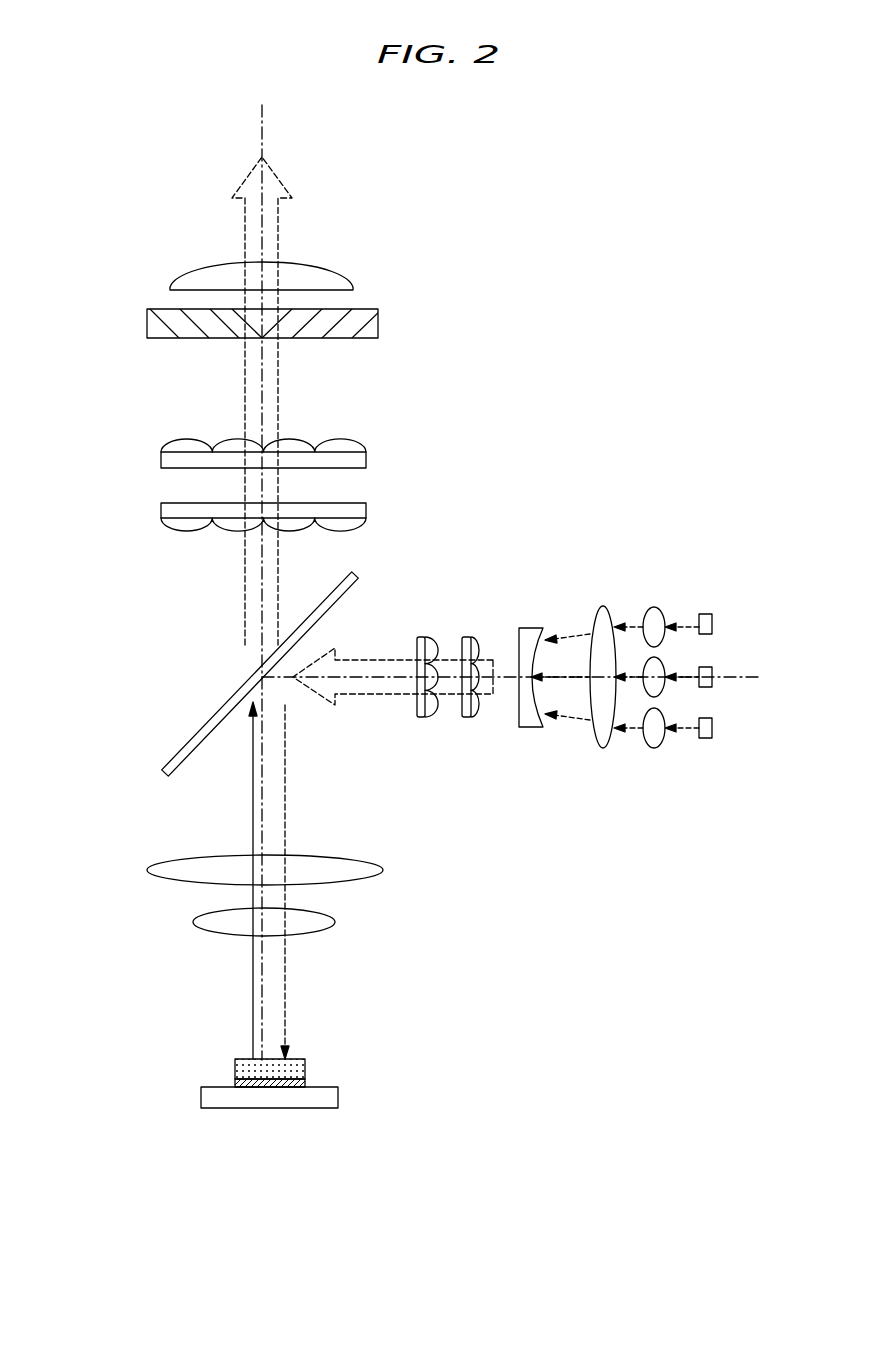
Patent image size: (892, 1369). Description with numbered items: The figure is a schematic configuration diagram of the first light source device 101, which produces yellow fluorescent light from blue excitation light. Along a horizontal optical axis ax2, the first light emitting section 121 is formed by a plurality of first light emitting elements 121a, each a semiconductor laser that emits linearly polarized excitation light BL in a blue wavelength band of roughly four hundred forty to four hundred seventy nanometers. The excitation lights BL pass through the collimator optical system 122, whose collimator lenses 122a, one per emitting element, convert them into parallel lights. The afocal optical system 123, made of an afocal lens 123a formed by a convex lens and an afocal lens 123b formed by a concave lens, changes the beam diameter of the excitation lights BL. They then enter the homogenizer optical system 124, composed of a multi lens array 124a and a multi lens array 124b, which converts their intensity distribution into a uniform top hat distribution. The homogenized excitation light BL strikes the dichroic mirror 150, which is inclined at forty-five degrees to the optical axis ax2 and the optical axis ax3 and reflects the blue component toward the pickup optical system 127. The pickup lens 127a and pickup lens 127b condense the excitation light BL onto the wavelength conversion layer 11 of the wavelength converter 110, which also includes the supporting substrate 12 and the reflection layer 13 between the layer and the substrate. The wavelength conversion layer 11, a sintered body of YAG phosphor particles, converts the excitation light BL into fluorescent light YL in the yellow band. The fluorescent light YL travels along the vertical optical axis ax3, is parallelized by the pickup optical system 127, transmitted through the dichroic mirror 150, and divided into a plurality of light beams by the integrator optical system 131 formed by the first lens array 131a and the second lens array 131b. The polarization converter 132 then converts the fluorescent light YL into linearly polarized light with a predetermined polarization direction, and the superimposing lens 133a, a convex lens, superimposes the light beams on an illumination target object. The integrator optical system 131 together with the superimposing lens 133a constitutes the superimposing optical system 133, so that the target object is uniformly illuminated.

The first light source device 101 is at (656, 204).
The wavelength converter 110 is at (175, 1055).
The wavelength conversion layer 11 is at (305, 1067).
The supporting substrate 12 is at (259, 1095).
The reflection layer 13 is at (305, 1083).
The first light emitting section 121 is at (706, 597).
The first light emitting element 121a is at (703, 739).
The collimator optical system 122 is at (654, 600).
The collimator lens 122a is at (654, 749).
The afocal optical system 123 is at (633, 548).
The afocal lens 123a is at (603, 605).
The afocal lens 123b is at (532, 628).
The homogenizer optical system 124 is at (507, 588).
The multi lens array 124a is at (468, 636).
The multi lens array 124b is at (422, 636).
The pickup optical system 127 is at (486, 845).
The pickup lens 127a is at (382, 871).
The pickup lens 127b is at (336, 922).
The integrator optical system 131 is at (470, 420).
The first lens array 131a is at (368, 510).
The second lens array 131b is at (368, 458).
The polarization converter 132 is at (380, 323).
The superimposing optical system 133 is at (148, 285).
The superimposing lens 133a is at (340, 263).
The dichroic mirror 150 is at (246, 690).
The optical axis ax2 is at (745, 674).
The optical axis ax3 is at (264, 132).
The excitation light BL is at (366, 697).
The fluorescent light YL is at (245, 215).